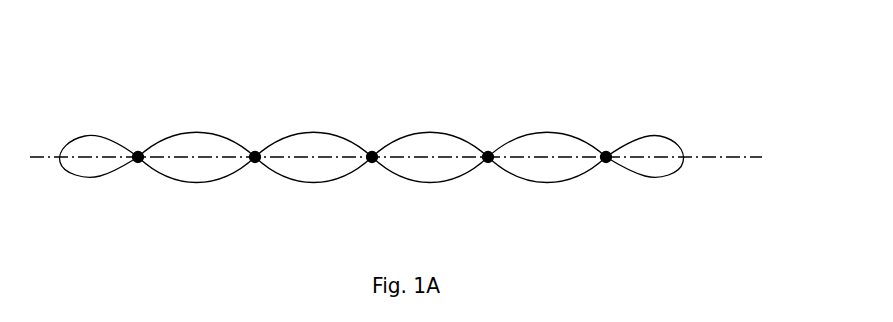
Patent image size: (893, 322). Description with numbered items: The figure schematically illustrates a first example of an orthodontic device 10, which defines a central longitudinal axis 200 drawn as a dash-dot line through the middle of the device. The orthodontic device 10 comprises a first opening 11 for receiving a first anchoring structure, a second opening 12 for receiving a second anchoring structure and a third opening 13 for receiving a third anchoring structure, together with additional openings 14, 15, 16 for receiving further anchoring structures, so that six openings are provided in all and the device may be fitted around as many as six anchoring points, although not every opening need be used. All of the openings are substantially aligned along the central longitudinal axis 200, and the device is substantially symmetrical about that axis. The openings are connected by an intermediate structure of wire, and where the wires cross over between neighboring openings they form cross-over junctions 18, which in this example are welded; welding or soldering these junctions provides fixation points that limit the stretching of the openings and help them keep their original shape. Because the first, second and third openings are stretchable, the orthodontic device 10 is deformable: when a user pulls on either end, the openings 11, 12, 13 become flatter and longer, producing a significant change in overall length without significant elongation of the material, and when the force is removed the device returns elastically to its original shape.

The orthodontic device 10 is at (538, 91).
The first opening 11 is at (90, 135).
The second opening 12 is at (195, 132).
The third opening 13 is at (313, 132).
The additional opening 14 is at (430, 132).
The additional opening 15 is at (577, 136).
The additional opening 16 is at (658, 135).
The cross-over junction 18 is at (128, 187).
The longitudinal axis 200 is at (720, 157).